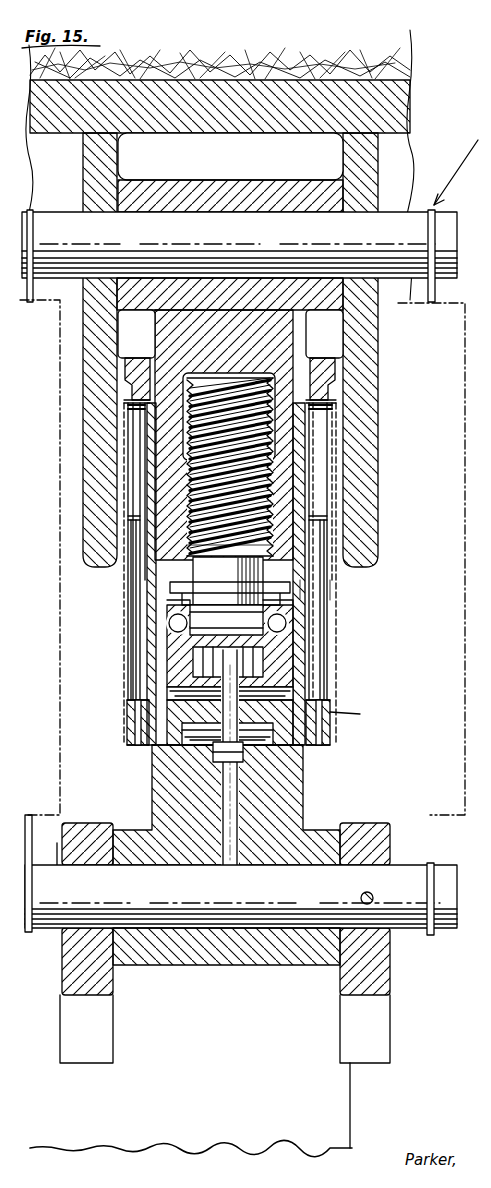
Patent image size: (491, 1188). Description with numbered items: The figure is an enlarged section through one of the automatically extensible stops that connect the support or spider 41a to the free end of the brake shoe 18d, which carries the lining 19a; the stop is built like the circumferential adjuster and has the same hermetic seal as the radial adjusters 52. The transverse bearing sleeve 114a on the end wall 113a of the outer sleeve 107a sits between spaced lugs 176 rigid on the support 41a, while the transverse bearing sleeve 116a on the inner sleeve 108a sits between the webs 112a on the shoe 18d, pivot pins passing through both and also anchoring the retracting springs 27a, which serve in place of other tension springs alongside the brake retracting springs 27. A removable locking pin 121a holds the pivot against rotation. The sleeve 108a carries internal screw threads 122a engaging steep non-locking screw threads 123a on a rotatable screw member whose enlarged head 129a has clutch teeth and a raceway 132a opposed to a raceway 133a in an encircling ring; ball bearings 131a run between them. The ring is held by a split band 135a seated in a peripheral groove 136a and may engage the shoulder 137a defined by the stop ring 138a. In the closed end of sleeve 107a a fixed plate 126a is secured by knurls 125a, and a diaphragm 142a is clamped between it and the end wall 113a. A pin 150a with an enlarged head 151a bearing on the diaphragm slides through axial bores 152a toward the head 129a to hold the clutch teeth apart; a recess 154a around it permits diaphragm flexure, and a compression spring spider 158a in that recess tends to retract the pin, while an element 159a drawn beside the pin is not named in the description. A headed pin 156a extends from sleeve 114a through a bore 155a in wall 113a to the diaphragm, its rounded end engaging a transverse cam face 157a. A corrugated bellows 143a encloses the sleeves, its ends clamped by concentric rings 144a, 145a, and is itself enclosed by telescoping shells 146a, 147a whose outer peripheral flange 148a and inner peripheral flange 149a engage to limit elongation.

The lining 19a is at (406, 62).
The brake shoe 18d is at (395, 106).
The radial adjuster 52 is at (459, 161).
The transverse bearing sleeve 116a is at (292, 196).
The web 112a is at (366, 328).
The concentric ring 145a is at (316, 372).
The screw threads 123a is at (282, 392).
The brake retracting spring 27 is at (462, 398).
The inner sleeve 108a is at (294, 436).
The outer sleeve 107a is at (294, 450).
The outer shell 147a is at (336, 472).
The outer peripheral flange 148a is at (331, 495).
The inner shell 146a is at (346, 520).
The internal screw threads 122a is at (277, 547).
The inner peripheral flange 149a is at (338, 600).
The peripheral groove 136a is at (213, 598).
The stop ring 138a is at (130, 598).
The split band 135a is at (138, 592).
The ball bearing 131a is at (168, 624).
The raceway 132a is at (188, 636).
The retracting spring 27a is at (58, 677).
The shoulder 137a is at (300, 612).
The raceway 133a is at (296, 624).
The enlarged head 129a is at (312, 641).
The spring 159a is at (265, 662).
The bellows 143a is at (310, 690).
The knurls 125a is at (165, 712).
The recess 154a is at (157, 735).
The concentric ring 144a is at (140, 748).
The enlarged head 151a is at (213, 748).
The bore 155a is at (220, 795).
The pin 150a is at (363, 713).
The fixed plate 126a is at (331, 722).
The axial bore 152a is at (333, 735).
The compression spring spider 158a is at (300, 765).
The diaphragm 142a is at (273, 778).
The end wall 113a is at (283, 798).
The headed pin 156a is at (223, 840).
The cam face 157a is at (243, 875).
The locking pin 121a is at (372, 892).
The transverse bearing sleeve 114a is at (165, 952).
The lug 176 is at (382, 984).
The support 41a is at (340, 1102).